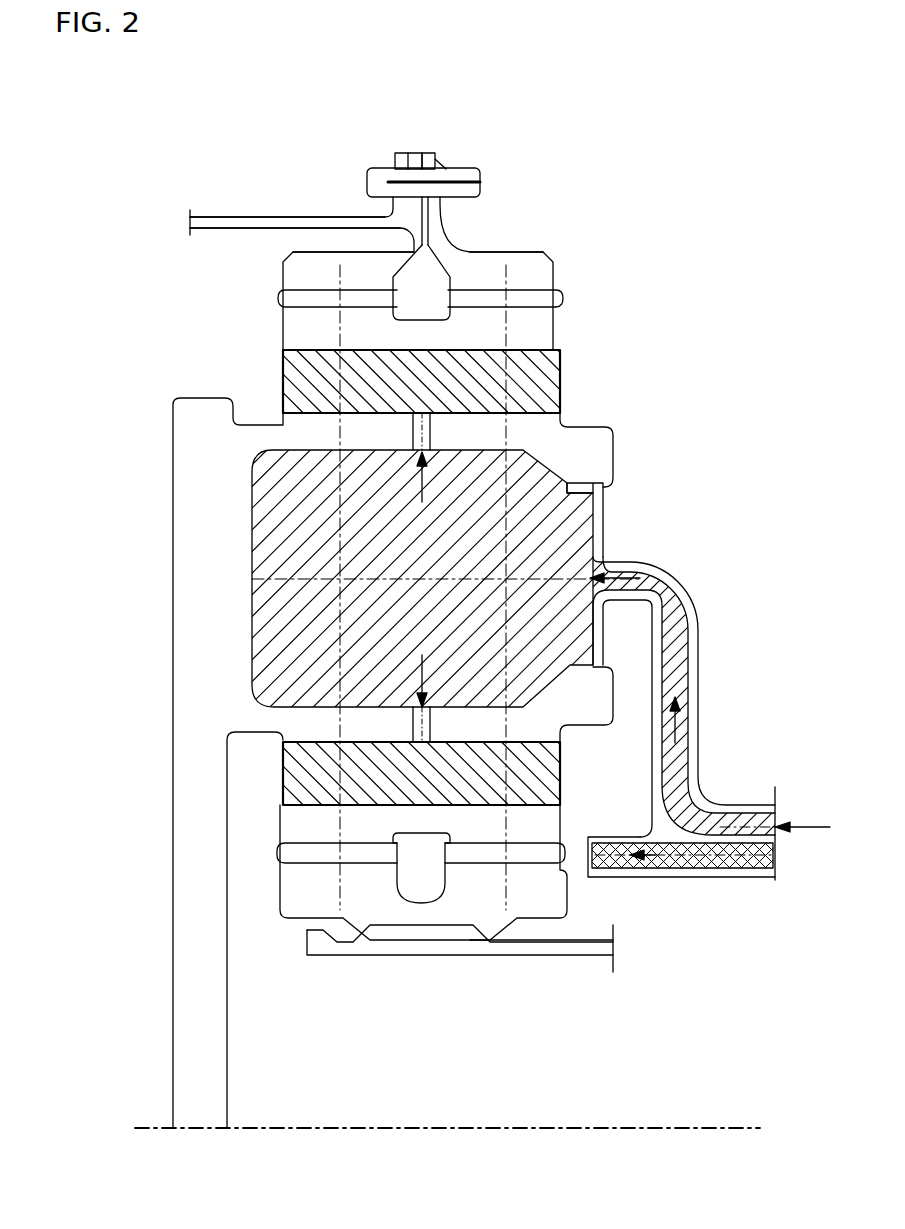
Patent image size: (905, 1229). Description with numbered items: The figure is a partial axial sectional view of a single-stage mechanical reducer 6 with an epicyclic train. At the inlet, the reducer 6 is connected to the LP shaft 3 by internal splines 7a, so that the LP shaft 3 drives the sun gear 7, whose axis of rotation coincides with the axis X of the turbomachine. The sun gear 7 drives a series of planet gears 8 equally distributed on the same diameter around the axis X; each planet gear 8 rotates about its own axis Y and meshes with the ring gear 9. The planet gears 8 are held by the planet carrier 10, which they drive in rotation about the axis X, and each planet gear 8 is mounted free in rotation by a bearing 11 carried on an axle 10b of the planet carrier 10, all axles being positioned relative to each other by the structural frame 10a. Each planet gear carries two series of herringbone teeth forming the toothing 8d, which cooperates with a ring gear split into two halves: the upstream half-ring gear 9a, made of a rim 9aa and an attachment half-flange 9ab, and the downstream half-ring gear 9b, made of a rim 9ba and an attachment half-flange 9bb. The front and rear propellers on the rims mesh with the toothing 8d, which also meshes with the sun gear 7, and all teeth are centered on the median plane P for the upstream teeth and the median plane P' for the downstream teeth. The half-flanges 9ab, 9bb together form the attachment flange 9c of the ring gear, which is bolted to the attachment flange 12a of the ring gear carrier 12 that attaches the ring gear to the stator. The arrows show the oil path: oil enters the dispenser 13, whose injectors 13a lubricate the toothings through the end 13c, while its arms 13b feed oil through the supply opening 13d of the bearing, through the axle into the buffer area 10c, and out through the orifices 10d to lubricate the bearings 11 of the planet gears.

The LP shaft 3 is at (570, 950).
The reducer 6 is at (728, 354).
The sun gear 7 is at (290, 877).
The internal splines 7a is at (393, 933).
The planet gear 8 is at (280, 835).
The toothing 8d is at (283, 852).
The ring gear 9 is at (409, 250).
The upstream half-ring gear 9a is at (292, 270).
The rim 9aa is at (310, 267).
The attachment half-flange 9ab is at (410, 153).
The downstream half-ring gear 9b is at (548, 280).
The rim 9ba is at (493, 267).
The attachment half-flange 9bb is at (430, 153).
The attachment flange 9c is at (436, 108).
The planet carrier 10 is at (596, 433).
The structural frame 10a is at (183, 520).
The axle 10b is at (600, 707).
The buffer area 10c is at (372, 623).
The orifice 10d is at (432, 427).
The bearing 11 is at (553, 378).
The ring gear carrier 12 is at (232, 215).
The attachment flange 12a is at (397, 160).
The dispenser 13 is at (770, 762).
The injector 13a is at (708, 867).
The arm 13b is at (687, 648).
The end 13c is at (588, 877).
The supply opening 13d is at (596, 500).
The median plane P is at (225, 933).
The median plane P' is at (463, 962).
The axis of rotation of the turbomachine X is at (707, 1126).
The axis of the planet gear Y is at (612, 552).